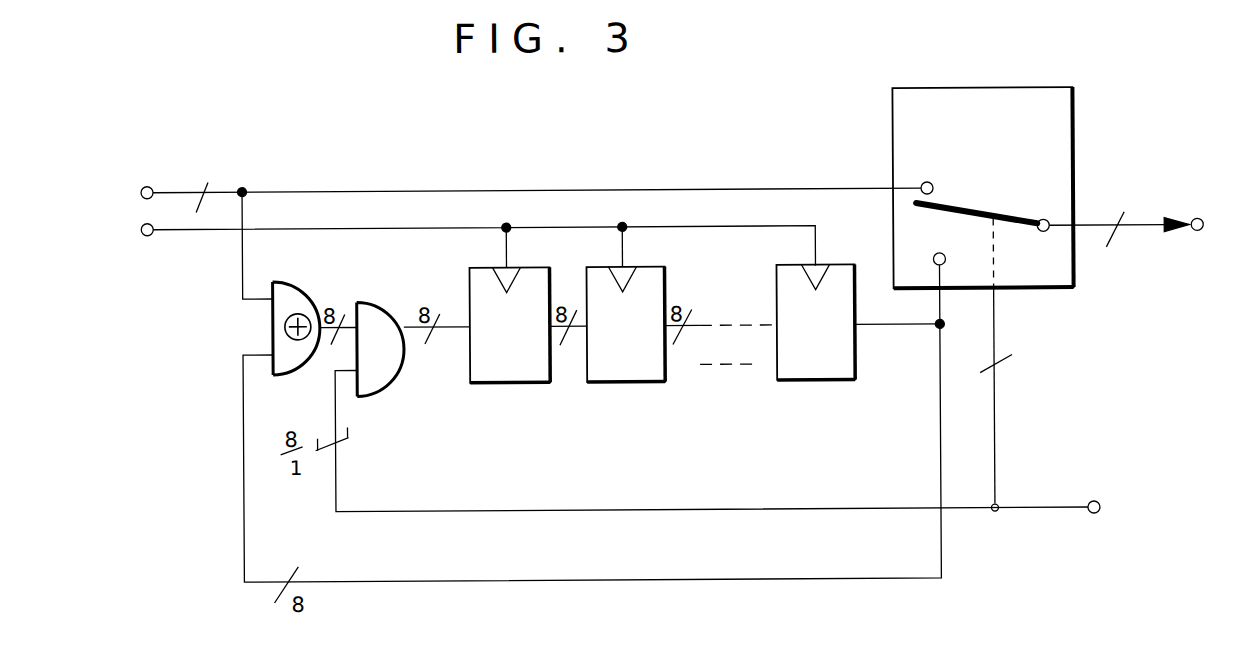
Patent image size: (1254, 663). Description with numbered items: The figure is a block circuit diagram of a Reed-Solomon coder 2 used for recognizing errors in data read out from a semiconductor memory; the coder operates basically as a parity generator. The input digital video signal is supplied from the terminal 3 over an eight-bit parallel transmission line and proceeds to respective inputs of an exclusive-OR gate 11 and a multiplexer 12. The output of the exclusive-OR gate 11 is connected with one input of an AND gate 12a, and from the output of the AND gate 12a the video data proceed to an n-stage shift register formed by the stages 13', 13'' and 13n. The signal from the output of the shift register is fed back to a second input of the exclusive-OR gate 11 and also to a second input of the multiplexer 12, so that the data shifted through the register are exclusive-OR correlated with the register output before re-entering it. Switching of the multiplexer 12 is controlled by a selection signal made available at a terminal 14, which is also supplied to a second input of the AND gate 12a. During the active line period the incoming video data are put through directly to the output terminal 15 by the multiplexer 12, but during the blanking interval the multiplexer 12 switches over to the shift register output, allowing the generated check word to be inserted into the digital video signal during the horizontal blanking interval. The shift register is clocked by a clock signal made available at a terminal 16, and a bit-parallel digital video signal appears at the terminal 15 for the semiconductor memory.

The Reed-Solomon coder 2 is at (558, 171).
The terminal 3 is at (519, 162).
The exclusive-OR gate 11 is at (283, 281).
The multiplexer 12 is at (893, 113).
The AND gate 12a is at (364, 300).
The first stage of n-stage shift register 13' is at (509, 347).
The second stage of n-stage shift register 13'' is at (626, 347).
The n-th stage of n-stage shift register 13n is at (788, 381).
The terminal 14 is at (1053, 403).
The terminal 15 is at (1144, 195).
The terminal 16 is at (440, 264).